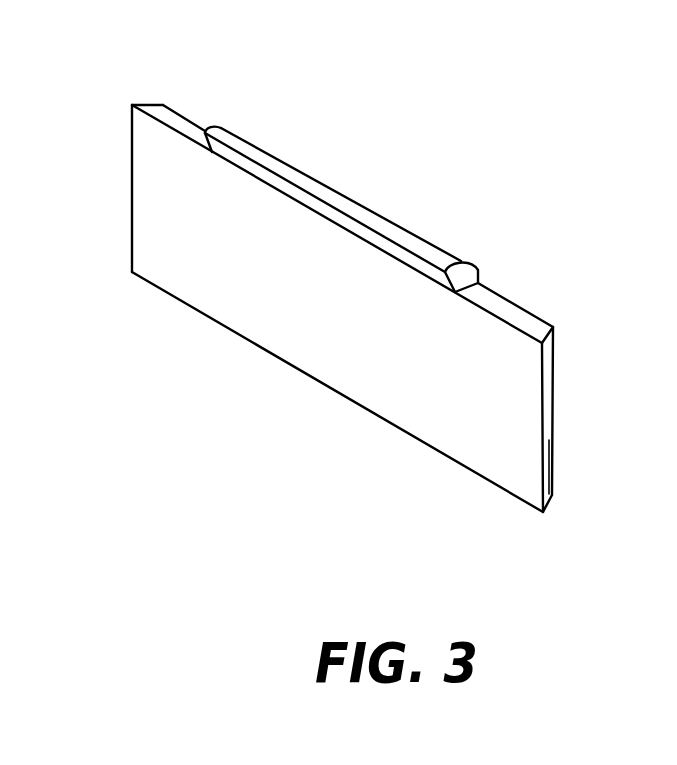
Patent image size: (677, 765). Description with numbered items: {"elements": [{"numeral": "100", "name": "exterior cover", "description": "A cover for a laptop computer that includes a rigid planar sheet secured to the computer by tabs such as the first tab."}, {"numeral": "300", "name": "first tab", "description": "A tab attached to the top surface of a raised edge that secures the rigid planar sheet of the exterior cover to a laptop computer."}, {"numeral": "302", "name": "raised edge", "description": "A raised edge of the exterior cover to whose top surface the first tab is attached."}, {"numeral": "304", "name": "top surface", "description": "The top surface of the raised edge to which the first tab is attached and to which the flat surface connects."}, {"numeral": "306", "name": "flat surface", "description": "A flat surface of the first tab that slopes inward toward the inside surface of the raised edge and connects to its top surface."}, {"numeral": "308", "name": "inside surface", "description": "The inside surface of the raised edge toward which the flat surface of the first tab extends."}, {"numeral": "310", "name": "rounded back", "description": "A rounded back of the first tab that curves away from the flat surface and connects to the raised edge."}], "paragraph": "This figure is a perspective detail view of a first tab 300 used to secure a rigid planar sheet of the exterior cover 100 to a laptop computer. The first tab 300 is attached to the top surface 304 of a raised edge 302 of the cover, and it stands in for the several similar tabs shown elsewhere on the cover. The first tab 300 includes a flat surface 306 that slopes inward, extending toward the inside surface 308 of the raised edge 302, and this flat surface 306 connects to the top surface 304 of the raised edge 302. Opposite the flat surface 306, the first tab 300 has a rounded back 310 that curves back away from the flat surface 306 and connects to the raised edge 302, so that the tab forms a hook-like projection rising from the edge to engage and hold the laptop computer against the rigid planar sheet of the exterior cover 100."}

The panel assembly 100 is at (184, 114).
The cylindrical boss 300 is at (465, 262).
The end face 302 is at (553, 330).
The top surface 304 is at (513, 312).
The rib front surface 306 is at (300, 197).
The front face 308 is at (487, 440).
The rib 310 is at (343, 193).